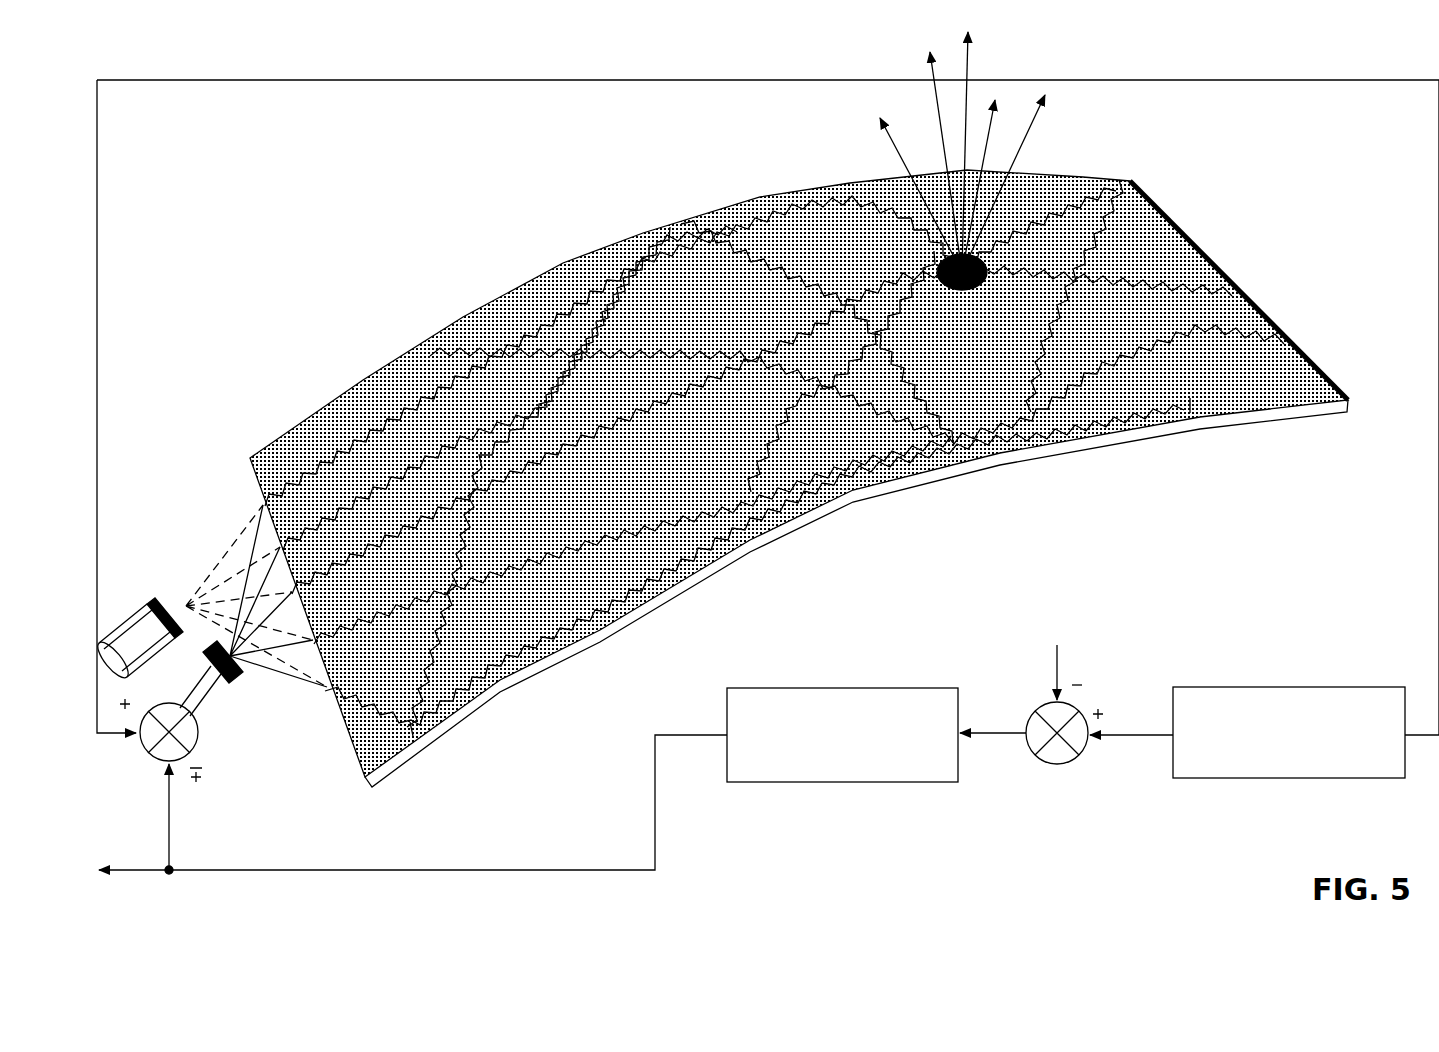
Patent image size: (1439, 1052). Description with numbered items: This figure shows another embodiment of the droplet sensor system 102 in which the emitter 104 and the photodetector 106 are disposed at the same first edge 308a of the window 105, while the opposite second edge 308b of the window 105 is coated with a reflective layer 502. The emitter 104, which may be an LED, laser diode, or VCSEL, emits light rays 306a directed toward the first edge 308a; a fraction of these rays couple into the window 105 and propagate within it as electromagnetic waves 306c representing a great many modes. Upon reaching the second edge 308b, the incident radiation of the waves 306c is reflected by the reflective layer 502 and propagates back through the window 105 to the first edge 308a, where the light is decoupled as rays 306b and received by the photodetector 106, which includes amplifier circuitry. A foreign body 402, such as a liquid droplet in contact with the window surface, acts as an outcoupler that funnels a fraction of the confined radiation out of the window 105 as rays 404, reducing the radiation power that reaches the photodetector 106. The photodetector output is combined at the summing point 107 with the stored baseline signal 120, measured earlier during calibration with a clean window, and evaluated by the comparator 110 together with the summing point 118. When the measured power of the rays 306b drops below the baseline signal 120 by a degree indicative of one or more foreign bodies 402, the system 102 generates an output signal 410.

The droplet sensor system 102 is at (303, 178).
The emitter 104 is at (223, 687).
The window 105 is at (553, 272).
The photodetector 106 is at (170, 607).
The summing point 107 is at (1037, 712).
The comparator 110 is at (795, 690).
The summing point 118 is at (148, 758).
The baseline signal 120 is at (1110, 520).
The light rays 306a is at (313, 683).
The rays 306b is at (237, 537).
The electromagnetic waves 306c is at (493, 350).
The first edge 308a is at (350, 743).
The second edge 308b is at (1287, 342).
The foreign body 402 is at (953, 250).
The outcoupled rays 404 is at (973, 63).
The output signal 410 is at (507, 836).
The reflective layer 502 is at (1200, 240).